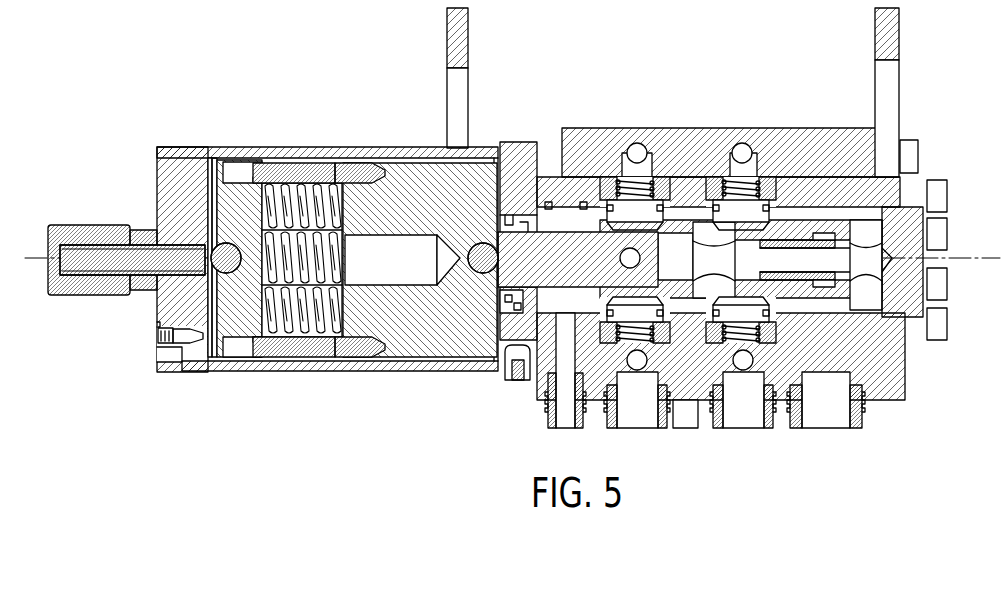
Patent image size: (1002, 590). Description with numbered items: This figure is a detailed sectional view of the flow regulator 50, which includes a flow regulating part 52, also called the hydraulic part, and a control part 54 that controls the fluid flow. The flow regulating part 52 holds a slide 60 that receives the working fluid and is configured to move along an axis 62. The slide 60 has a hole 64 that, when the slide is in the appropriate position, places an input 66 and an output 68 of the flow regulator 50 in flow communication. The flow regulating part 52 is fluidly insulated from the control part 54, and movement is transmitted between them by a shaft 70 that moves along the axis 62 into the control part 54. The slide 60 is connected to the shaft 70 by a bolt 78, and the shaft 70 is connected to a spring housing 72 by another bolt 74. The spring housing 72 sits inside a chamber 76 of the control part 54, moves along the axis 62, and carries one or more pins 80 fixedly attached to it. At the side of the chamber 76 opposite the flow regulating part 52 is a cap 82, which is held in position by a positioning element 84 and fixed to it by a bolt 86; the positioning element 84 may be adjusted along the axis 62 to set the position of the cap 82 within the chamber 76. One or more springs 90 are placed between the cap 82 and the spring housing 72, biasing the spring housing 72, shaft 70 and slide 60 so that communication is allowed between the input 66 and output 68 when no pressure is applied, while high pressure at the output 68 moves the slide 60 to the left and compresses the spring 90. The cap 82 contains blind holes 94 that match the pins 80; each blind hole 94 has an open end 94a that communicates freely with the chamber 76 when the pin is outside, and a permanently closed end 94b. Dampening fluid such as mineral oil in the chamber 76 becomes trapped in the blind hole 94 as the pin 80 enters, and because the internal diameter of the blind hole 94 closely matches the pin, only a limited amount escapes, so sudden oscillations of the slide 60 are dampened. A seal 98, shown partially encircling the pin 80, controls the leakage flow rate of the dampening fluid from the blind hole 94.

The flow regulator 50 is at (512, 243).
The flow regulating part 52 is at (696, 245).
The control part 54 is at (273, 271).
The slide 60 is at (750, 232).
The axis 62 is at (387, 258).
The hole 64 is at (743, 260).
The input 66 is at (738, 430).
The output 68 is at (823, 430).
The shaft 70 is at (565, 255).
The spring housing 72 is at (420, 257).
The bolt 74 is at (472, 250).
The chamber 76 is at (372, 366).
The bolt 78 is at (632, 247).
The pin 80 is at (310, 165).
The cap 82 is at (230, 307).
The positioning element 84 is at (115, 250).
The bolt 86 is at (226, 258).
The spring 90 is at (300, 320).
The blind hole 94 is at (227, 315).
The open end 94a is at (243, 345).
The closed end 94b is at (218, 347).
The seal 98 is at (253, 168).